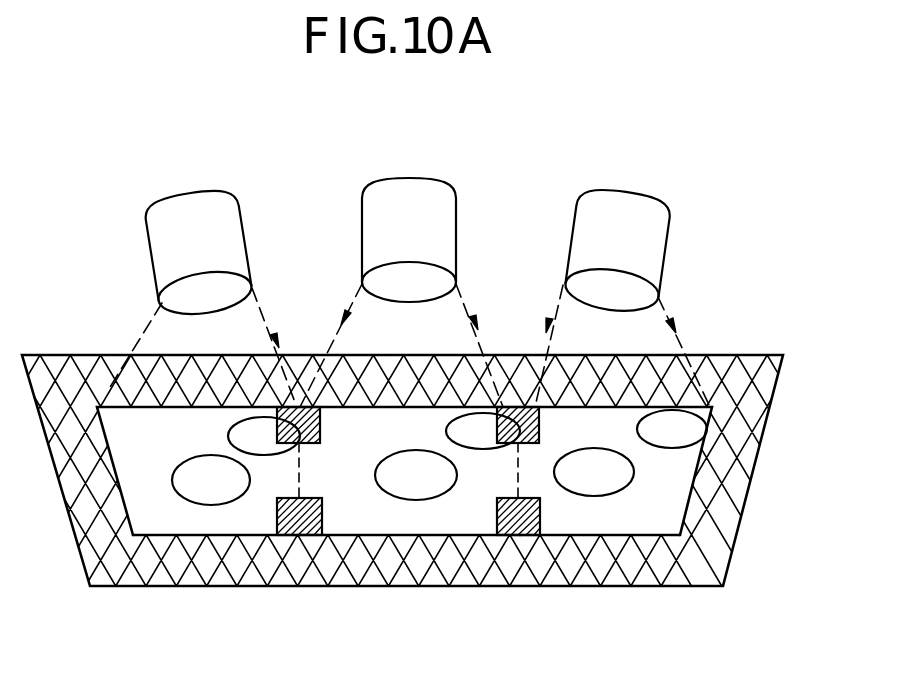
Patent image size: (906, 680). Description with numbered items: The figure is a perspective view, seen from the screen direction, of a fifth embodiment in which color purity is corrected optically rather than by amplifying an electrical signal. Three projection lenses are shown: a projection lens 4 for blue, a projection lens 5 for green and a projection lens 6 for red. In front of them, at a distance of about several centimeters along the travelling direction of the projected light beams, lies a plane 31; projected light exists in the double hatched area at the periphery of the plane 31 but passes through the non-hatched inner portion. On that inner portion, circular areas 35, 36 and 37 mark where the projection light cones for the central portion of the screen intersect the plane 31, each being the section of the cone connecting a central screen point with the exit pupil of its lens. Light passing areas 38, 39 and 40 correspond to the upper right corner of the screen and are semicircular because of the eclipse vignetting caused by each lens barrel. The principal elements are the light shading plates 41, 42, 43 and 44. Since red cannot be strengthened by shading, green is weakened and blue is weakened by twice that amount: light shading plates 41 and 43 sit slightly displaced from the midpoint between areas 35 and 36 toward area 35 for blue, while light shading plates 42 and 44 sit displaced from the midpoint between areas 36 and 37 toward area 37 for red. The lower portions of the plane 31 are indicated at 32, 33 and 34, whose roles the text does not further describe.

The projection lens for blue 4 is at (194, 194).
The projection lens for green 5 is at (422, 181).
The projection lens for red 6 is at (633, 195).
The plane 31 is at (749, 388).
The first bottom section 32 is at (165, 528).
The second bottom section 33 is at (433, 523).
The third bottom section 34 is at (663, 520).
The circular area 35 is at (211, 480).
The circular area 36 is at (416, 475).
The circular area 37 is at (594, 472).
The light passing area 38 is at (264, 436).
The light passing area 39 is at (483, 431).
The light passing area 40 is at (672, 429).
The light shading plate 41 is at (320, 418).
The light shading plate 42 is at (539, 420).
The light shading plate 43 is at (322, 508).
The light shading plate 44 is at (540, 509).